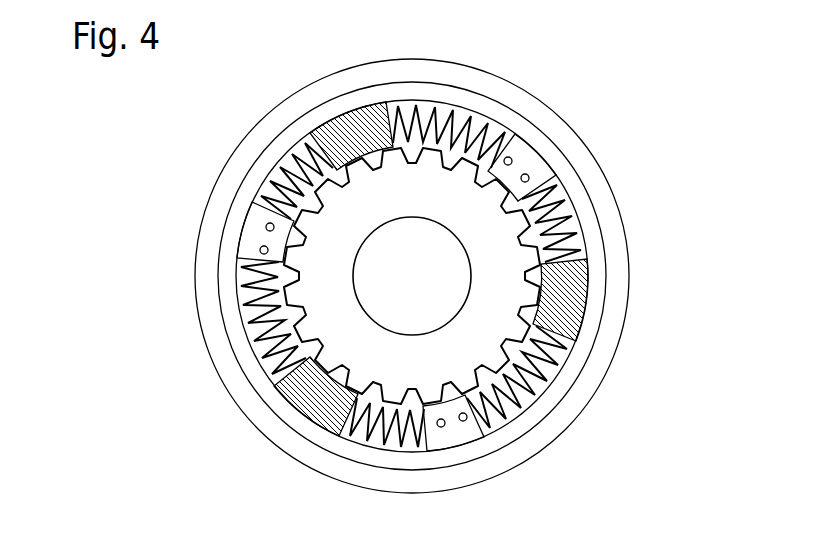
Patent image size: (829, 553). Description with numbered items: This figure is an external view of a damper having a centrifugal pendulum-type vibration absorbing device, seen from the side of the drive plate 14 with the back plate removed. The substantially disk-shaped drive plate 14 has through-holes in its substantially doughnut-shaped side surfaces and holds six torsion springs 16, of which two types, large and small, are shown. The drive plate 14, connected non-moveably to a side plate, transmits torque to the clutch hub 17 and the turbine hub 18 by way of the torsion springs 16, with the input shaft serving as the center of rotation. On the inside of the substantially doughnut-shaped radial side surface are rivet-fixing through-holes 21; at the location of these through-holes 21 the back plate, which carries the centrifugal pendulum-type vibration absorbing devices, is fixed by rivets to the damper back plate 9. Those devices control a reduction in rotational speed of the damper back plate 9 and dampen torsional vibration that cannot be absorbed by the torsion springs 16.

The damper back plate 9 is at (505, 160).
The drive plate 14 is at (603, 386).
The torsion springs 16 is at (455, 165).
The clutch hub 17 is at (343, 120).
The turbine hub 18 is at (365, 425).
The rivet-fixing through-holes 21 is at (527, 176).